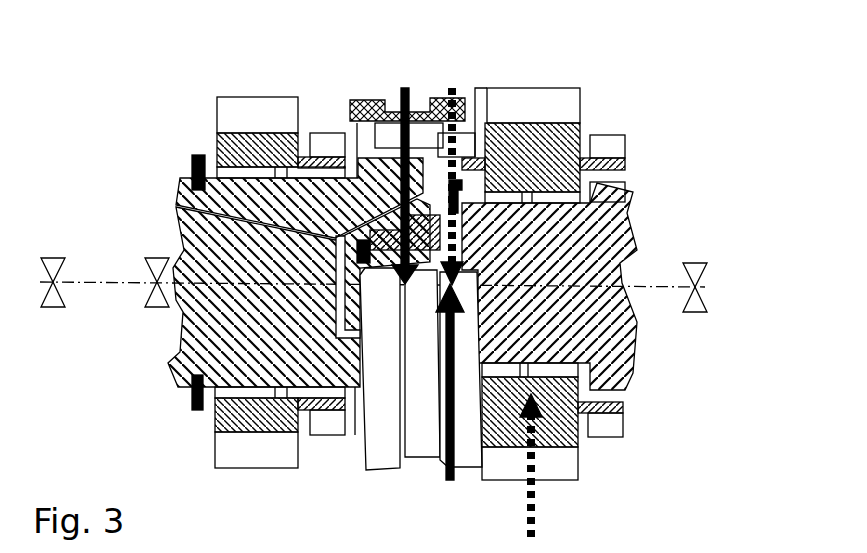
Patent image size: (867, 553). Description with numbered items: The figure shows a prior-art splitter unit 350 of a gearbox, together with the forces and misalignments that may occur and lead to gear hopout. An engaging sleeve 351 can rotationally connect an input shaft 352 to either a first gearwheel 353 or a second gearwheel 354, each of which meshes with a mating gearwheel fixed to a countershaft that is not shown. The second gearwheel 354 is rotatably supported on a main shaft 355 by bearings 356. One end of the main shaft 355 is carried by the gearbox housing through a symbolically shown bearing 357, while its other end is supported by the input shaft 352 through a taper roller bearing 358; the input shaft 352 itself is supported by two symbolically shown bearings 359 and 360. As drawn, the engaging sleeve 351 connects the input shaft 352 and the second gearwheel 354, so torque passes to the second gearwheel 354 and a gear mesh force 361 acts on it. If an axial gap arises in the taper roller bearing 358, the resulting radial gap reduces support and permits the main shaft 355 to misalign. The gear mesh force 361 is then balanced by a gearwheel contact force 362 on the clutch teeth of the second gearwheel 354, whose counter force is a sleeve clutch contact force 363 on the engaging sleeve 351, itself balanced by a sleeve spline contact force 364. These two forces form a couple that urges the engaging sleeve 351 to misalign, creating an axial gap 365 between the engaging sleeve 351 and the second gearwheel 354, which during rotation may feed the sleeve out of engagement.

The splitter unit 350 is at (160, 70).
The engaging sleeve 351 is at (345, 100).
The input shaft 352 is at (223, 212).
The first gearwheel 353 is at (240, 130).
The second gearwheel 354 is at (547, 120).
The main shaft 355 is at (595, 238).
The bearings 356 is at (562, 198).
The bearing 357 is at (695, 314).
The taper roller bearing 358 is at (255, 217).
The bearing 359 is at (55, 310).
The bearing 360 is at (157, 310).
The gear mesh force 361 is at (534, 505).
The gearwheel contact force 362 is at (451, 86).
The sleeve clutch contact force 363 is at (445, 470).
The sleeve spline contact force 364 is at (402, 86).
The axial gap 365 is at (474, 97).